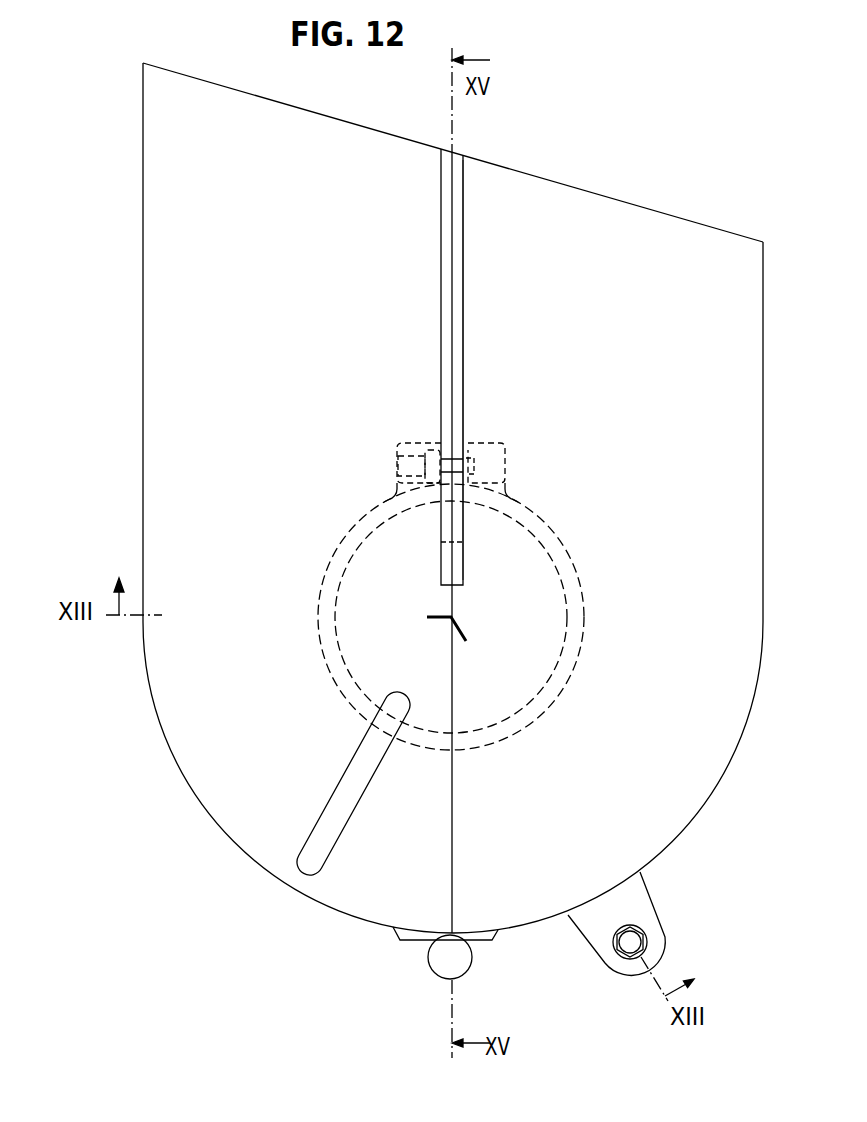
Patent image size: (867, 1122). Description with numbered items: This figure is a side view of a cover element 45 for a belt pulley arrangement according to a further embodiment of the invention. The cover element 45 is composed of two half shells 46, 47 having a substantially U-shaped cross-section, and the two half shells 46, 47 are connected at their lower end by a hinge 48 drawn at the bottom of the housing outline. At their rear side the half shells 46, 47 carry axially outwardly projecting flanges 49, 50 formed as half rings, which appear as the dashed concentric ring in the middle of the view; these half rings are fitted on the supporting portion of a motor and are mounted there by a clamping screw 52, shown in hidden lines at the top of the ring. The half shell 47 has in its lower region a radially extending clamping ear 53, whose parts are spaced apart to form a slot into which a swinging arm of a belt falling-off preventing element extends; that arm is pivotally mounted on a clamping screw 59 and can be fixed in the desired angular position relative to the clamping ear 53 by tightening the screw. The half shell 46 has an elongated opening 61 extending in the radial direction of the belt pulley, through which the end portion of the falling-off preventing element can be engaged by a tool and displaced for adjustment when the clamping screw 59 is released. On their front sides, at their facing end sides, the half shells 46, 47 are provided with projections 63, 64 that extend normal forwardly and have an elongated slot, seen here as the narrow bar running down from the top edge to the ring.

The cover element 45 is at (380, 131).
The half shell 46 is at (190, 772).
The half shell 47 is at (735, 728).
The hinge 48 is at (461, 960).
The flange 49 is at (336, 564).
The flange 50 is at (569, 662).
The clamping screw 52 is at (472, 447).
The clamping ear 53 is at (656, 925).
The clamping screw 59 is at (619, 952).
The elongated opening 61 is at (335, 832).
The projection 63 is at (441, 300).
The projection 64 is at (463, 350).